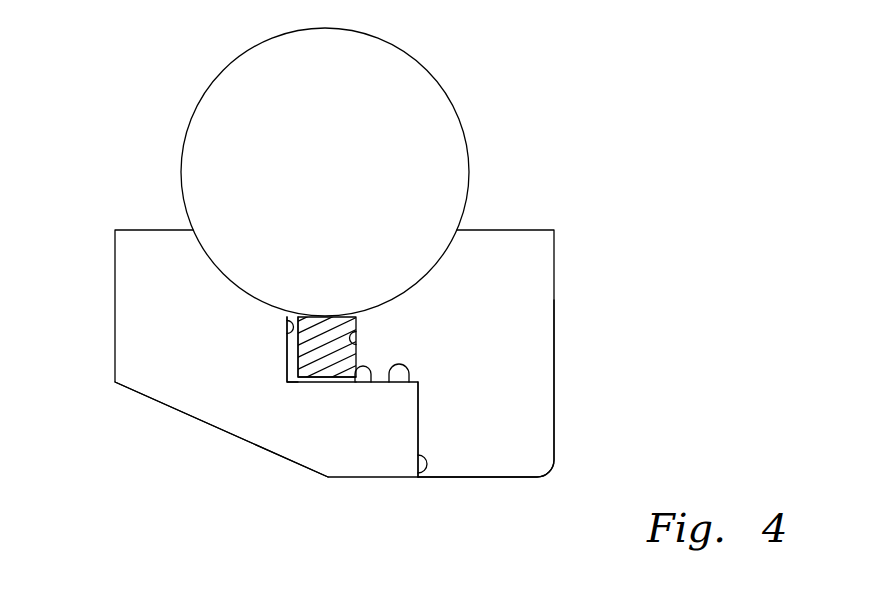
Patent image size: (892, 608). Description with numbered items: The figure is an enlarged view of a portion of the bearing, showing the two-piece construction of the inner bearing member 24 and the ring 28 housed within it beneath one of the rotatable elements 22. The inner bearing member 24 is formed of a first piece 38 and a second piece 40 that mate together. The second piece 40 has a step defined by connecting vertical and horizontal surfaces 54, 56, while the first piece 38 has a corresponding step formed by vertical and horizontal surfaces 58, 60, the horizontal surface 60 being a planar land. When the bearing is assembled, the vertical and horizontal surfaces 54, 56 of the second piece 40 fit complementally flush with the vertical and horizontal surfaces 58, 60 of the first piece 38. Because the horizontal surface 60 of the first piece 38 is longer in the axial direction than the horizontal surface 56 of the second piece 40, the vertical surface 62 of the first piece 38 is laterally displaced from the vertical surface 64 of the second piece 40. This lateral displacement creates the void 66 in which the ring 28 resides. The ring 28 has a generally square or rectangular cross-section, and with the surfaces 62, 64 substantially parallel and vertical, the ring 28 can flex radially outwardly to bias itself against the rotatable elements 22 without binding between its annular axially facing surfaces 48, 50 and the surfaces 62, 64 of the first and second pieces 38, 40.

The rotatable elements 22 is at (395, 87).
The inner bearing member 24 is at (583, 358).
The ring 28 is at (325, 365).
The first piece 38 is at (170, 398).
The second piece 40 is at (532, 428).
The annular axially facing surface 48 is at (287, 362).
The annular axially facing surface 50 is at (370, 383).
The vertical surface 54 is at (418, 430).
The horizontal surface 56 is at (419, 390).
The vertical surface 58 is at (417, 468).
The horizontal surface 60 is at (388, 384).
The vertical surface 62 is at (285, 335).
The vertical surface 64 is at (357, 347).
The void 66 is at (275, 354).